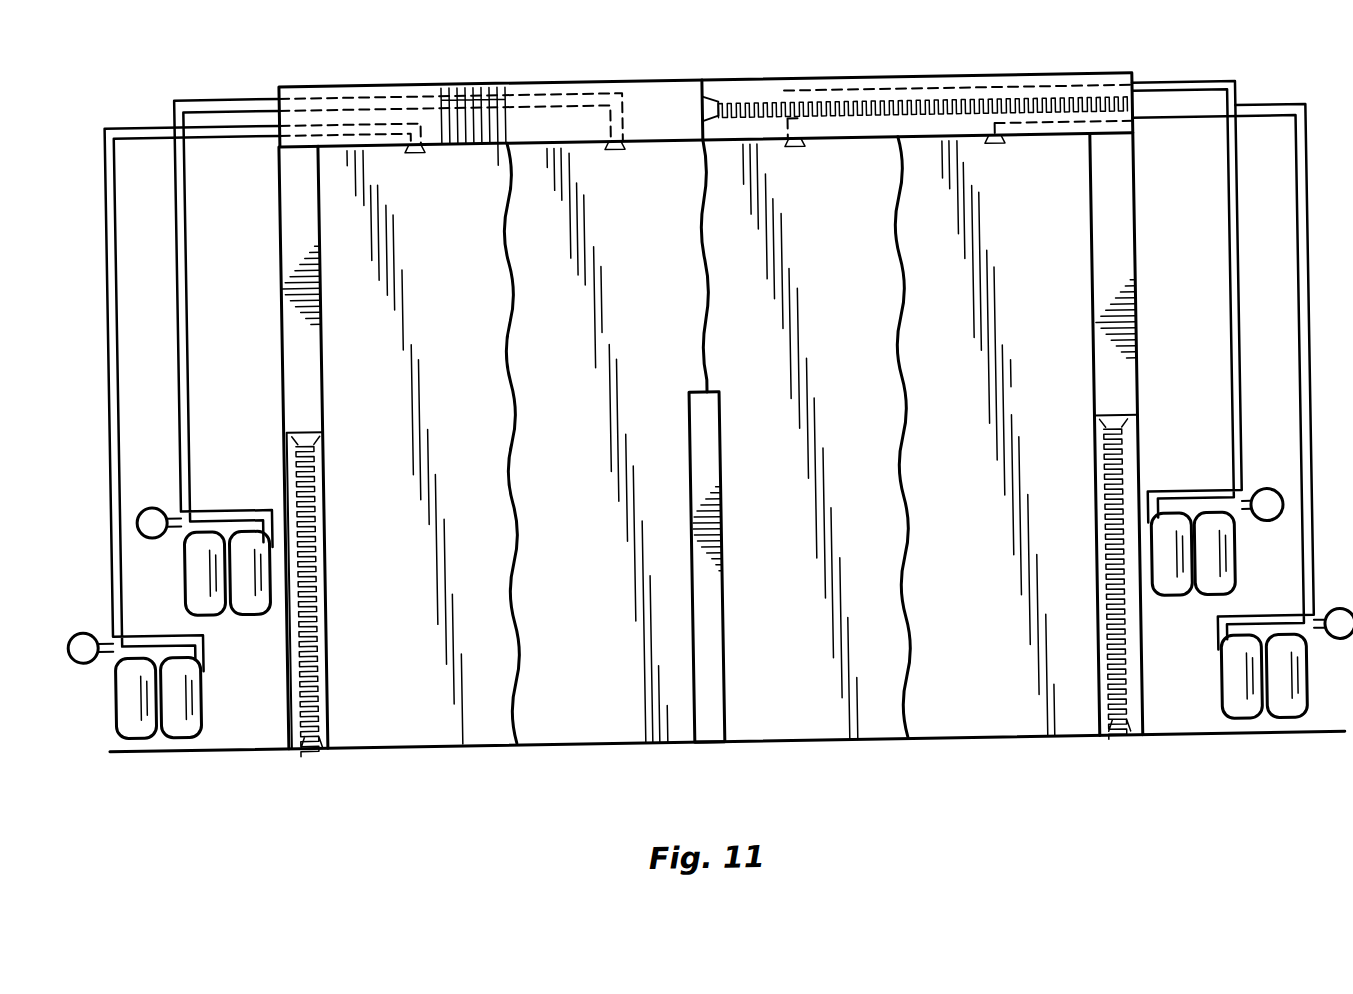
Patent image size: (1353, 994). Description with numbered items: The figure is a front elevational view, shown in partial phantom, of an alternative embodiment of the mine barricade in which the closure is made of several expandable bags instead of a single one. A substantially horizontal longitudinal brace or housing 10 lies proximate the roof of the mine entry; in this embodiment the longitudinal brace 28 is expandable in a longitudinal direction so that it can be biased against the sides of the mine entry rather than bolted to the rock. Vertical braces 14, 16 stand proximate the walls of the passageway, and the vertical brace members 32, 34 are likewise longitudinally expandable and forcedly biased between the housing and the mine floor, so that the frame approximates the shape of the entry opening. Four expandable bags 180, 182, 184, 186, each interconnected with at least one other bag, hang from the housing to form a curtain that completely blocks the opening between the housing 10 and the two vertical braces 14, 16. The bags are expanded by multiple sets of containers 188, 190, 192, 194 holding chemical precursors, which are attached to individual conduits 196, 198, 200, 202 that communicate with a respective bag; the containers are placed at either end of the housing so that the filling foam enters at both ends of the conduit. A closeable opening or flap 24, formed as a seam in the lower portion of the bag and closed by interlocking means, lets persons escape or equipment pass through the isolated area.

The longitudinal brace 10 is at (669, 97).
The vertical brace 14 is at (1126, 242).
The vertical brace 16 is at (301, 176).
The closeable opening or flap 24 is at (712, 655).
The longitudinal brace 28 is at (768, 101).
The vertical brace member 32 is at (1113, 737).
The vertical brace member 34 is at (295, 745).
The expandable bag 180 is at (381, 715).
The expandable bag 182 is at (573, 723).
The expandable bag 184 is at (806, 722).
The expandable bag 186 is at (981, 705).
The set of containers 188 is at (113, 730).
The set of containers 190 is at (214, 527).
The set of containers 192 is at (1204, 523).
The set of containers 194 is at (1279, 710).
The conduit 196 is at (350, 116).
The conduit 198 is at (551, 90).
The conduit 200 is at (911, 98).
The conduit 202 is at (1070, 124).